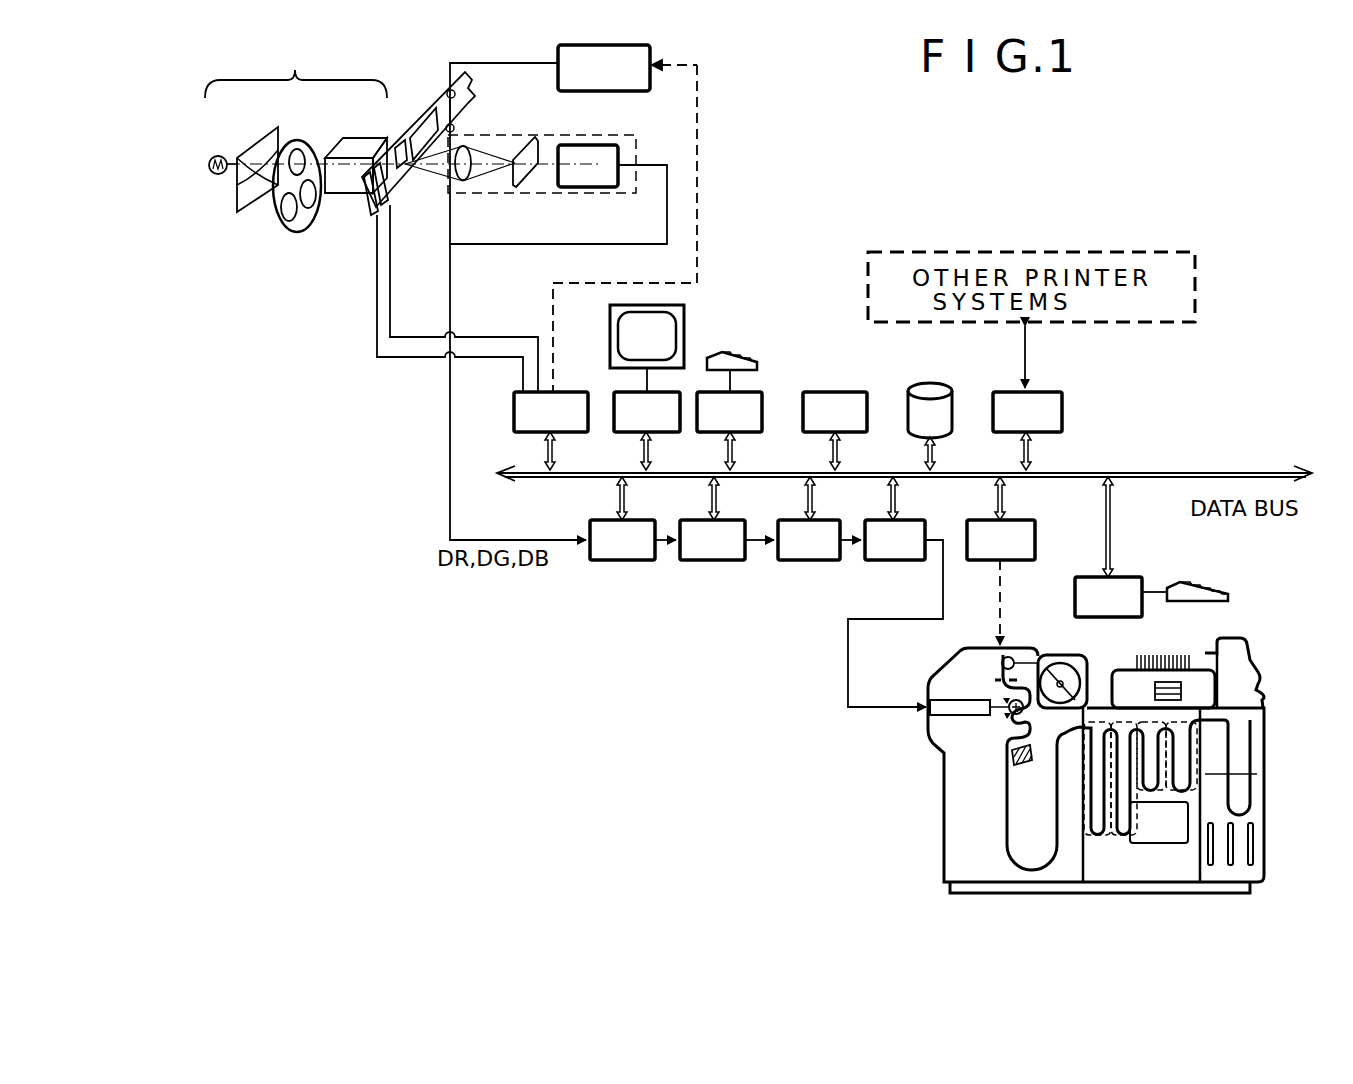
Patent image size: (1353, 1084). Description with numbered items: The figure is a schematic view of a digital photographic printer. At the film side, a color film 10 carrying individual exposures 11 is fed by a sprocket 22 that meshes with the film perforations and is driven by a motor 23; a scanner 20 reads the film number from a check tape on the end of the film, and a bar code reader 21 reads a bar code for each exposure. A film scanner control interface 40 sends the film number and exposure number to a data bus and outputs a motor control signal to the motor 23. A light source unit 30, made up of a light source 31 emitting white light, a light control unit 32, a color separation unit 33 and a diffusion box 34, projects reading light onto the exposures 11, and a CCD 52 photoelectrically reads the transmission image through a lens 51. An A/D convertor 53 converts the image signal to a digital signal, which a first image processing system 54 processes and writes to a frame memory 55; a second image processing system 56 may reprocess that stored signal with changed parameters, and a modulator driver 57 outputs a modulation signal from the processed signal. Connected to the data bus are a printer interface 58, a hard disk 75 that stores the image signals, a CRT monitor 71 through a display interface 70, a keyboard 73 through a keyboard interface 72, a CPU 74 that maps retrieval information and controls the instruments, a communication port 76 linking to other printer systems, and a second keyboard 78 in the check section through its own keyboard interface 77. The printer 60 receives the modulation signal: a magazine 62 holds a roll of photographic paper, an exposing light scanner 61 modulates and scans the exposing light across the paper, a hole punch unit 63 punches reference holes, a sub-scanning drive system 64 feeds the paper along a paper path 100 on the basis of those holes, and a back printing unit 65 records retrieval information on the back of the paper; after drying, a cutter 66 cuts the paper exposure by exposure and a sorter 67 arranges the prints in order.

The color film 10 is at (412, 180).
The exposures 11 is at (430, 124).
The scanner 20 is at (367, 202).
The bar code reader 21 is at (398, 148).
The sprocket 22 is at (456, 96).
The motor 23 is at (653, 52).
The light source unit 30 is at (296, 71).
The light source 31 is at (219, 156).
The light control unit 32 is at (278, 126).
The color separation unit 33 is at (302, 140).
The diffusion box 34 is at (343, 142).
The film scanner control interface 40 is at (578, 434).
The lens 51 is at (466, 146).
The CCD 52 is at (540, 140).
The A/D convertor 53 is at (580, 190).
The first image processing system 54 is at (645, 562).
The frame memory 55 is at (712, 562).
The second image processing system 56 is at (800, 562).
The modulator driver 57 is at (908, 562).
The printer interface 58 is at (1020, 562).
The printer 60 is at (925, 757).
The exposing light scanner 61 is at (950, 700).
The magazine 62 is at (1076, 672).
The hole punch unit 63 is at (984, 667).
The sub-scanning drive system 64 is at (1004, 721).
The back printing unit 65 is at (1030, 766).
The cutter 66 is at (1245, 650).
The sorter 67 is at (1172, 665).
The display interface 70 is at (672, 434).
The CRT monitor 71 is at (670, 327).
The keyboard interface 72 is at (763, 434).
The keyboard 73 is at (760, 363).
The CPU 74 is at (869, 434).
The hard disk 75 is at (933, 383).
The communication port 76 is at (1003, 434).
The keyboard interface 77 is at (1125, 577).
The keyboard 78 is at (1192, 582).
The paper path 100 is at (1005, 815).